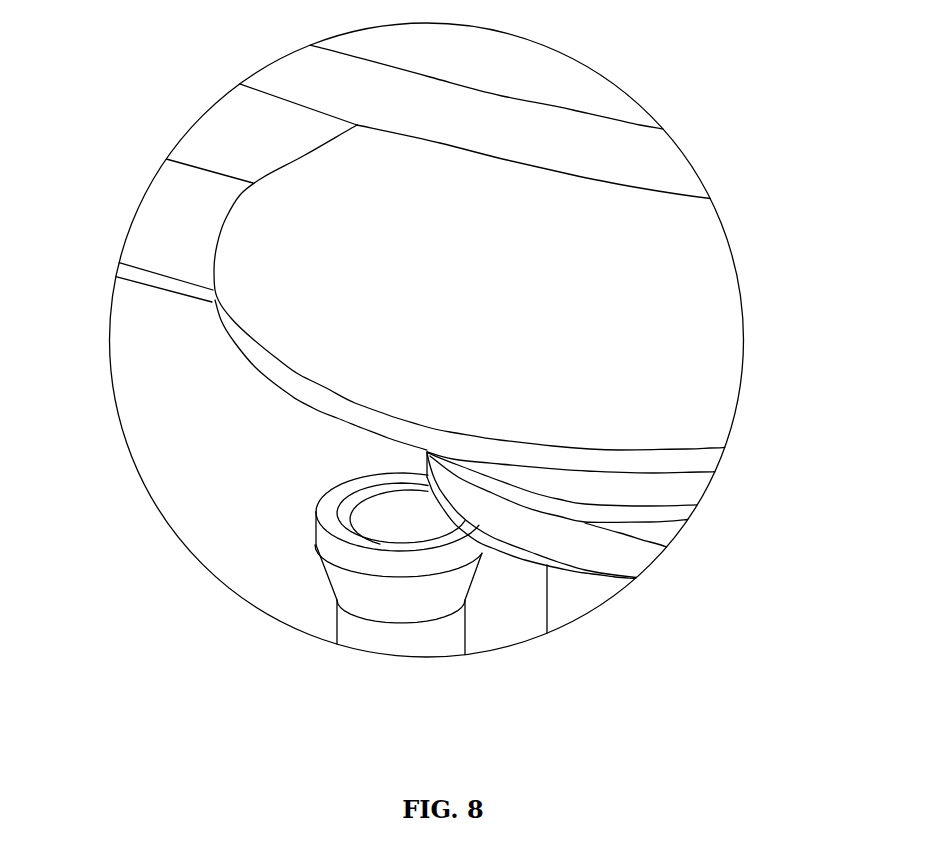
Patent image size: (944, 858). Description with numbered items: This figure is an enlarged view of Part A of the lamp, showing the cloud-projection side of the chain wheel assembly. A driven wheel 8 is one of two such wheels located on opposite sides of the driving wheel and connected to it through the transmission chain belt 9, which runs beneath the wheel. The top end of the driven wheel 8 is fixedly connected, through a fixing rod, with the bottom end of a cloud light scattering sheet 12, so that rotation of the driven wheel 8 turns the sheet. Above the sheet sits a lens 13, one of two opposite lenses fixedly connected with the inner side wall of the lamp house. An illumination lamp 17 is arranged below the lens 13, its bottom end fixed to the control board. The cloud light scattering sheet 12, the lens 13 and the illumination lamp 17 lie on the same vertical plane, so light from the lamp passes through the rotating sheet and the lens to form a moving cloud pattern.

The Part A is at (722, 225).
The lens 13 is at (178, 218).
The cloud light scattering sheet 12 is at (638, 337).
The transmission chain belt 9 is at (525, 525).
The driven wheel 8 is at (617, 487).
The illumination lamp 17 is at (395, 513).